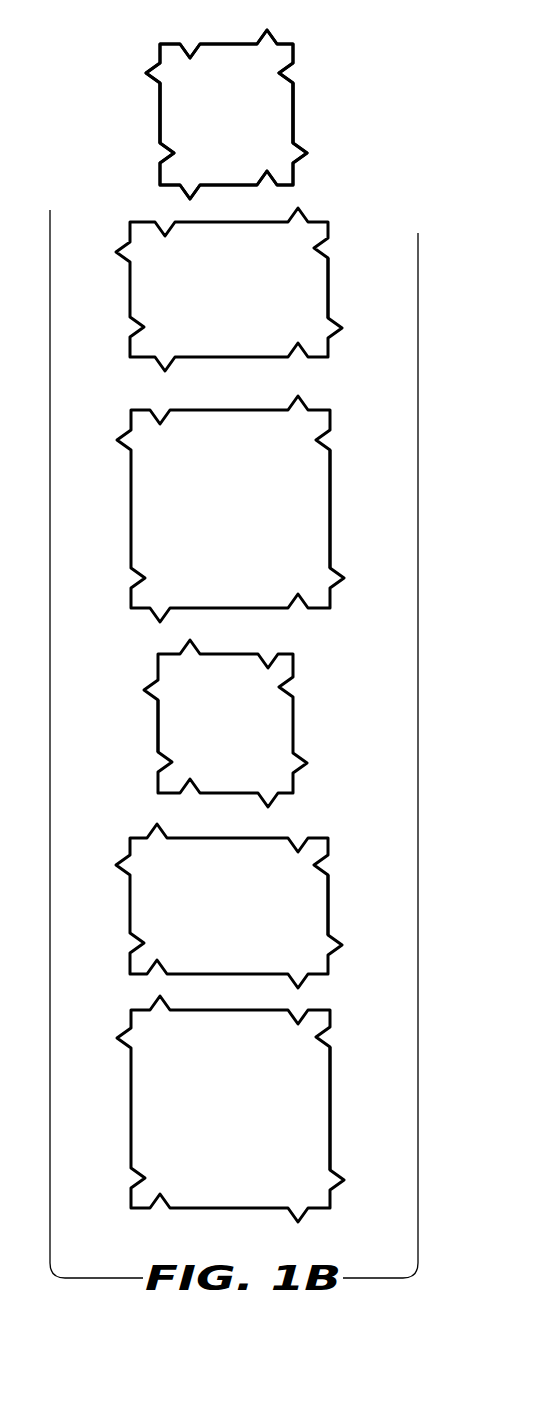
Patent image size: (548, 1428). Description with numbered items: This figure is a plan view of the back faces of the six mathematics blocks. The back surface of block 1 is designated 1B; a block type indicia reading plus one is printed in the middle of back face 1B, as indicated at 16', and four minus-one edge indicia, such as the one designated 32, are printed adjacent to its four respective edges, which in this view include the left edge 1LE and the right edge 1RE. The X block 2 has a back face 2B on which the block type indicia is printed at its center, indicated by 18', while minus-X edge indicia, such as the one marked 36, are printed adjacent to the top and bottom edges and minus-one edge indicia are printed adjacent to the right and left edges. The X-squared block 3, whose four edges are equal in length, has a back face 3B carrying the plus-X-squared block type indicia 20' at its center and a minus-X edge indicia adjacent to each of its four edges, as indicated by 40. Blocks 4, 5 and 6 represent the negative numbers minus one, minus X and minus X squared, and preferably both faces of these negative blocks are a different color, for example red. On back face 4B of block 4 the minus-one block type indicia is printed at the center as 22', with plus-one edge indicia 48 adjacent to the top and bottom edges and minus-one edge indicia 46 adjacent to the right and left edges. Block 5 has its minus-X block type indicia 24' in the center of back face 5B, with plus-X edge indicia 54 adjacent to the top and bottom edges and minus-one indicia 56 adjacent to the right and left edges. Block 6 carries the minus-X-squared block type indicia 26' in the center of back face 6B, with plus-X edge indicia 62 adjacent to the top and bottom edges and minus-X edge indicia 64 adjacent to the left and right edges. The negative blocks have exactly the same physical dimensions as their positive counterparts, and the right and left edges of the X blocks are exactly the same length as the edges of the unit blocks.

The block 1 is at (155, 60).
The back face of block 1 1B is at (298, 54).
The left edge of first tile 1LE is at (297, 118).
The right edge of first tile 1RE is at (160, 127).
The block type indicia 16' is at (242, 93).
The edge indicia 32 is at (215, 168).
The X block 2 is at (125, 303).
The back face of block 2 2B is at (330, 272).
The block type indicia 18' is at (253, 276).
The edge value symbol of second tile 36 is at (240, 347).
The X-squared block 3 is at (125, 497).
The back face of block 3 3B is at (332, 518).
The edge indicia 40 is at (170, 508).
The block type indicia 20' is at (251, 483).
The mathematics block 4 is at (152, 722).
The back face of block 4 4B is at (158, 747).
The edge indicia 46 is at (175, 735).
The block type indicia 22' is at (243, 707).
The edge indicia 48 is at (240, 783).
The mathematics block 5 is at (125, 914).
The back face of block 5 5B is at (330, 918).
The edge indicia 54 is at (223, 862).
The block type indicia 24' is at (254, 896).
The edge indicia 56 is at (145, 918).
The mathematics block 6 is at (118, 1110).
The back face of block 6 6B is at (332, 1087).
The edge indicia 62 is at (227, 1038).
The block type indicia 26' is at (250, 1079).
The edge indicia 64 is at (150, 1115).